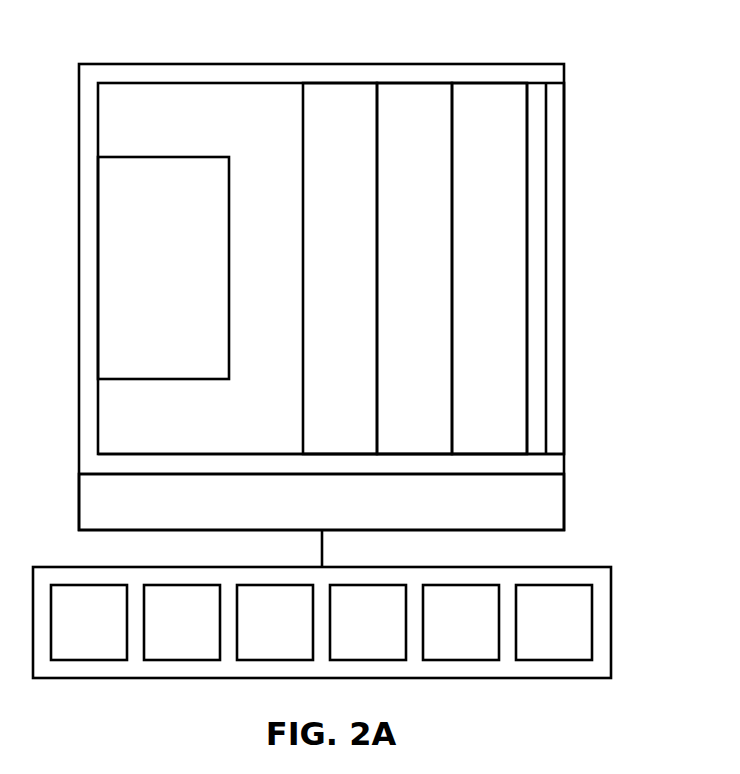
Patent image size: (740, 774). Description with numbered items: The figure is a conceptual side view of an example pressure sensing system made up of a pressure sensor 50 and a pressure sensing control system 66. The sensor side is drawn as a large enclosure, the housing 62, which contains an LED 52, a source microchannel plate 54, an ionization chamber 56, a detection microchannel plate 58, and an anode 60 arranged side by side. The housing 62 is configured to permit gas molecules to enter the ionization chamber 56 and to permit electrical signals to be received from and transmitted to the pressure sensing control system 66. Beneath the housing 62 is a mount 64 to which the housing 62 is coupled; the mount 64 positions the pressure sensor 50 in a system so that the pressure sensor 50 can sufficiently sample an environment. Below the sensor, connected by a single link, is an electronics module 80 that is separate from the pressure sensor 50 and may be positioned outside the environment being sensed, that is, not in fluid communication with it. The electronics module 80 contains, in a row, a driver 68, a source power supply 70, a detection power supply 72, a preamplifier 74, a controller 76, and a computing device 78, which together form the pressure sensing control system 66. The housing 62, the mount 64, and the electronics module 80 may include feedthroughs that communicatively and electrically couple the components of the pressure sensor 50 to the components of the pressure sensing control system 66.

The pressure sensor 50 is at (556, 45).
The LED 52 is at (152, 280).
The source microchannel plate 54 is at (328, 280).
The ionization chamber 56 is at (403, 280).
The detection microchannel plate 58 is at (478, 280).
The anode 60 is at (553, 269).
The housing 62 is at (550, 466).
The mount 64 is at (309, 514).
The pressure sensing control system 66 is at (668, 490).
The driver 68 is at (77, 635).
The source power supply 70 is at (170, 635).
The detection power supply 72 is at (263, 635).
The preamplifier 74 is at (356, 635).
The controller 76 is at (449, 635).
The computing device 78 is at (542, 635).
The electronics module 80 is at (590, 567).